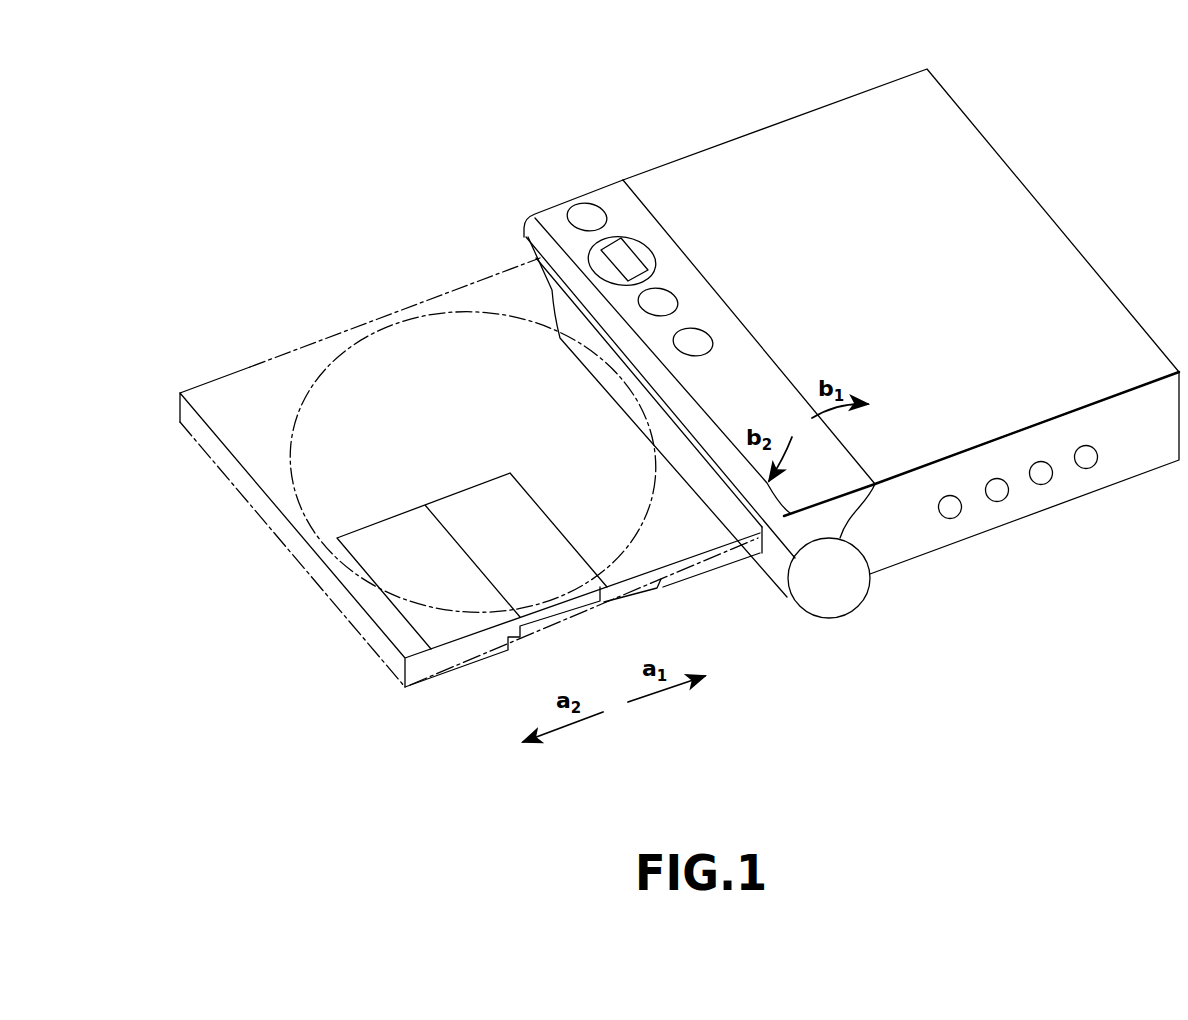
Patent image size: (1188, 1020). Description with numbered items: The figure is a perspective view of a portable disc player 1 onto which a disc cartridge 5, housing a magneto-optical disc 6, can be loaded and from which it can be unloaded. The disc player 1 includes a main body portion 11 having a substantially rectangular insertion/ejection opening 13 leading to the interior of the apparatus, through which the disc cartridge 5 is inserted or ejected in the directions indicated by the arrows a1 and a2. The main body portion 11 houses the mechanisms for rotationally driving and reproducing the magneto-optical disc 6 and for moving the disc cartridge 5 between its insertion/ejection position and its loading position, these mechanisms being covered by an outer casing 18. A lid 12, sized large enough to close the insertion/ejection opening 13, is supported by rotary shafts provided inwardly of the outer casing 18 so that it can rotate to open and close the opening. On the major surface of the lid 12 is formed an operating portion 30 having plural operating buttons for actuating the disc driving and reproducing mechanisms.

The disc player 1 is at (818, 657).
The disc cartridge 5 is at (275, 388).
The magneto-optical disc 6 is at (413, 342).
The main body portion 11 is at (942, 184).
The lid 12 is at (750, 378).
The insertion/ejection opening 13 is at (760, 562).
The outer casing 18 is at (928, 522).
The operating portion 30 is at (606, 189).